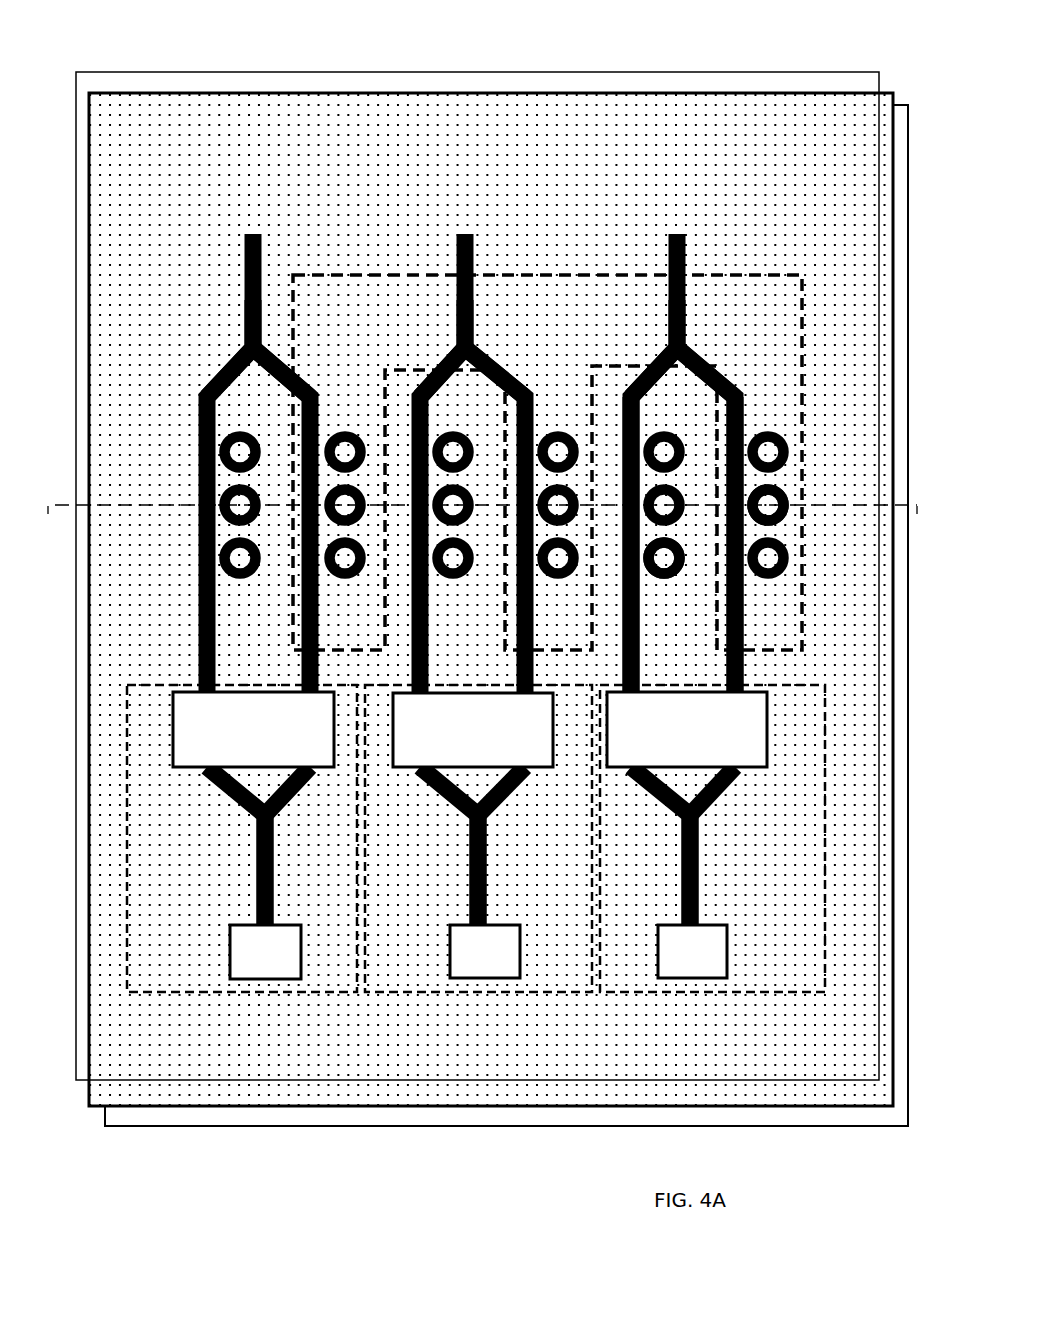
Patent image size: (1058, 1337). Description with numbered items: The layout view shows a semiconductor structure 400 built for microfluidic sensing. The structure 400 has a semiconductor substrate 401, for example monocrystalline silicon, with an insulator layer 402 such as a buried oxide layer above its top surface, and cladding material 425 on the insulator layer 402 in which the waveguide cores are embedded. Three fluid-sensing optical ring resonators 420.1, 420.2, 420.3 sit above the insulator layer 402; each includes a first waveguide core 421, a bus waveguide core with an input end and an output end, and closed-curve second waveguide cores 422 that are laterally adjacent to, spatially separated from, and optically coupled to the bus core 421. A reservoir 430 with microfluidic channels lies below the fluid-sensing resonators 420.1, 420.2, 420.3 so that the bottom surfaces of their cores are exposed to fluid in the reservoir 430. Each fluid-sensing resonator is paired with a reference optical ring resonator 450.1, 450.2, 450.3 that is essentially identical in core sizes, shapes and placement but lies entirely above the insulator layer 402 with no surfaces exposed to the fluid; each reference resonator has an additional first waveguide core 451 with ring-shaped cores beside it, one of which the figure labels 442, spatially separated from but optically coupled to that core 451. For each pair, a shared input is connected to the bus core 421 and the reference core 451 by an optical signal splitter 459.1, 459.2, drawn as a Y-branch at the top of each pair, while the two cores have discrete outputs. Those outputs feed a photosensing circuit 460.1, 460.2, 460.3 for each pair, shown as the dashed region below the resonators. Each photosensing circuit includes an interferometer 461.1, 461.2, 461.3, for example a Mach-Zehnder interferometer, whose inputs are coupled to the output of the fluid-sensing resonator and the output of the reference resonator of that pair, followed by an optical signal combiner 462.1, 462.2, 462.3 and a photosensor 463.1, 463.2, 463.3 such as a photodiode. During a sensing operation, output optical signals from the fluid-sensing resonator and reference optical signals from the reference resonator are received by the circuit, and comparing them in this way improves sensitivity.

The semiconductor structure 400 is at (502, 588).
The semiconductor substrate 401 is at (908, 207).
The insulator layer 402 is at (893, 172).
The cladding material 425 is at (879, 140).
The reservoir 430 is at (705, 275).
The fluid-sensing optical ring resonator 420.1 is at (762, 414).
The fluid-sensing optical ring resonator 420.2 is at (550, 384).
The fluid-sensing optical ring resonator 420.3 is at (338, 410).
The reference optical ring resonator 450.1 is at (624, 376).
The reference optical ring resonator 450.2 is at (415, 378).
The reference optical ring resonator 450.3 is at (194, 383).
The optical signal splitter 459.1 is at (244, 323).
The optical signal splitter 459.2 is at (482, 356).
The additional first waveguide core 451 is at (635, 610).
The first waveguide core 421 is at (743, 530).
The second waveguide core 422 is at (793, 510).
The ring resonator 442 is at (677, 568).
The interferometer 461.1 is at (687, 729).
The interferometer 461.2 is at (473, 730).
The interferometer 461.3 is at (253, 729).
The optical signal combiner 462.1 is at (700, 825).
The optical signal combiner 462.2 is at (488, 823).
The optical signal combiner 462.3 is at (274, 822).
The photosensor 463.1 is at (692, 951).
The photosensor 463.2 is at (485, 951).
The photosensor 463.3 is at (265, 952).
The photosensing circuit 460.1 is at (738, 992).
The photosensing circuit 460.2 is at (478, 992).
The photosensing circuit 460.3 is at (242, 992).